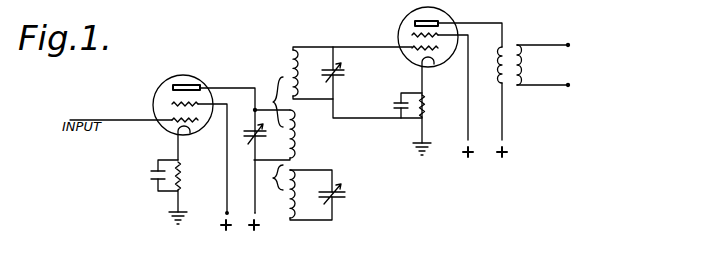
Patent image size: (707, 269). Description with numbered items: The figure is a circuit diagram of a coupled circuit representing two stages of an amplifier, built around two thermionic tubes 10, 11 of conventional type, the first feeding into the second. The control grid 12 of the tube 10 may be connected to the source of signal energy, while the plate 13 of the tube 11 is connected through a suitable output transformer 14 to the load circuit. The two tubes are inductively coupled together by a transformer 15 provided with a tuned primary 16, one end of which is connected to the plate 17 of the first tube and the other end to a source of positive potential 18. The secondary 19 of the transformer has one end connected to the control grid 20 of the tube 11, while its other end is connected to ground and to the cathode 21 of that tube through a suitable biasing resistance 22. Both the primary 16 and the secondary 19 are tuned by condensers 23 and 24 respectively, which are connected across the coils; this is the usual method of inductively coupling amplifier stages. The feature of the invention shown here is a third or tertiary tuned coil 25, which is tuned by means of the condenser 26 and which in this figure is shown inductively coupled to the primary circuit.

The thermionic tube 10 is at (164, 80).
The thermionic tube 11 is at (452, 17).
The control grid 12 is at (175, 119).
The plate 13 is at (410, 24).
The output transformer 14 is at (514, 37).
The transformer 15 is at (268, 58).
The tuned primary 16 is at (297, 139).
The plate 17 is at (191, 86).
The source of positive potential 18 is at (256, 216).
The secondary 19 is at (297, 72).
The control grid 20 is at (418, 49).
The cathode 21 is at (415, 60).
The biasing resistance 22 is at (426, 118).
The condenser 23 is at (243, 135).
The condenser 24 is at (348, 73).
The tertiary tuned coil 25 is at (300, 198).
The condenser 26 is at (350, 200).